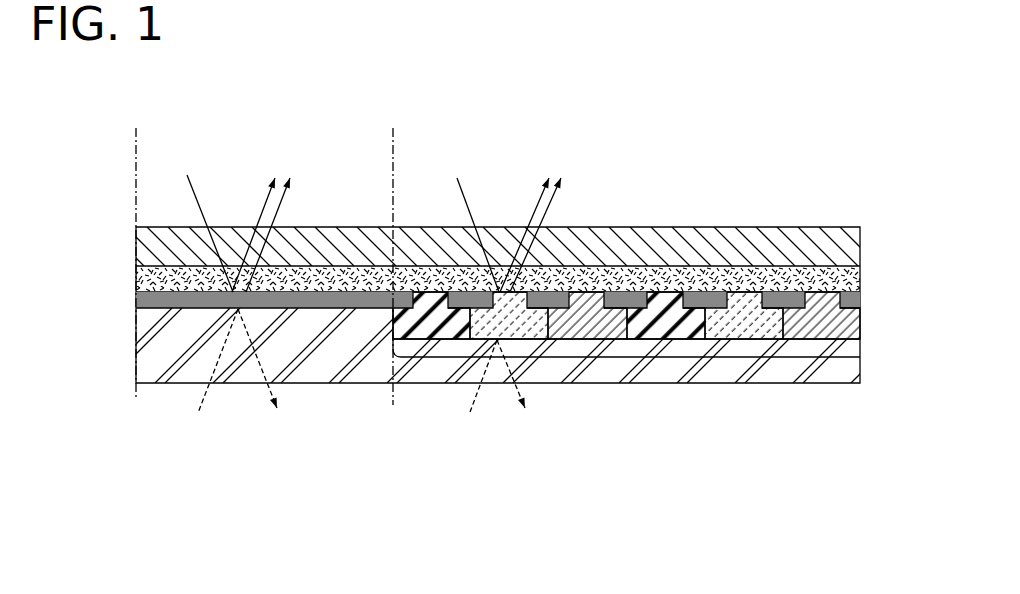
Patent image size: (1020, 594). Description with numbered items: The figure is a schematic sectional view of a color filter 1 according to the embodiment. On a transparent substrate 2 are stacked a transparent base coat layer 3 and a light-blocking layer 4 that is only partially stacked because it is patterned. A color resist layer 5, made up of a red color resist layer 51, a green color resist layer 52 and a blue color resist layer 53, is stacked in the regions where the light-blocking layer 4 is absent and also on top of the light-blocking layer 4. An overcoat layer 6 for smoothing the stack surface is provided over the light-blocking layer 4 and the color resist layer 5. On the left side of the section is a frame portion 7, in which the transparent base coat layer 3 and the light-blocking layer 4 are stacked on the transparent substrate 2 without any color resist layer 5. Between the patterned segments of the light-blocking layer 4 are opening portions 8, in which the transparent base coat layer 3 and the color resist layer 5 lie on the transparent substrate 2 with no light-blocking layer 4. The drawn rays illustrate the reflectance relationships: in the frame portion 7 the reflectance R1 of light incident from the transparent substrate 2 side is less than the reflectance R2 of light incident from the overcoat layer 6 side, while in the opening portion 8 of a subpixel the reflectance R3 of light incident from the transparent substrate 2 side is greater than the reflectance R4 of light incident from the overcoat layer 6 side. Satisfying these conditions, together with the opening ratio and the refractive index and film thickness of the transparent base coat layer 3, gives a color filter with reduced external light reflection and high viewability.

The color filter 1 is at (840, 138).
The transparent substrate 2 is at (150, 247).
The transparent base coat layer 3 is at (150, 281).
The light-blocking layer 4 is at (150, 298).
The color resist layer 5 is at (621, 358).
The overcoat layer 6 is at (150, 347).
The frame portion 7 is at (393, 128).
The opening portion 8 is at (683, 227).
The red color resist layer 51 is at (687, 320).
The green color resist layer 52 is at (770, 320).
The blue color resist layer 53 is at (850, 320).
The reflectance R1 is at (246, 216).
The reflectance R2 is at (247, 380).
The reflectance R3 is at (516, 216).
The reflectance R4 is at (508, 396).